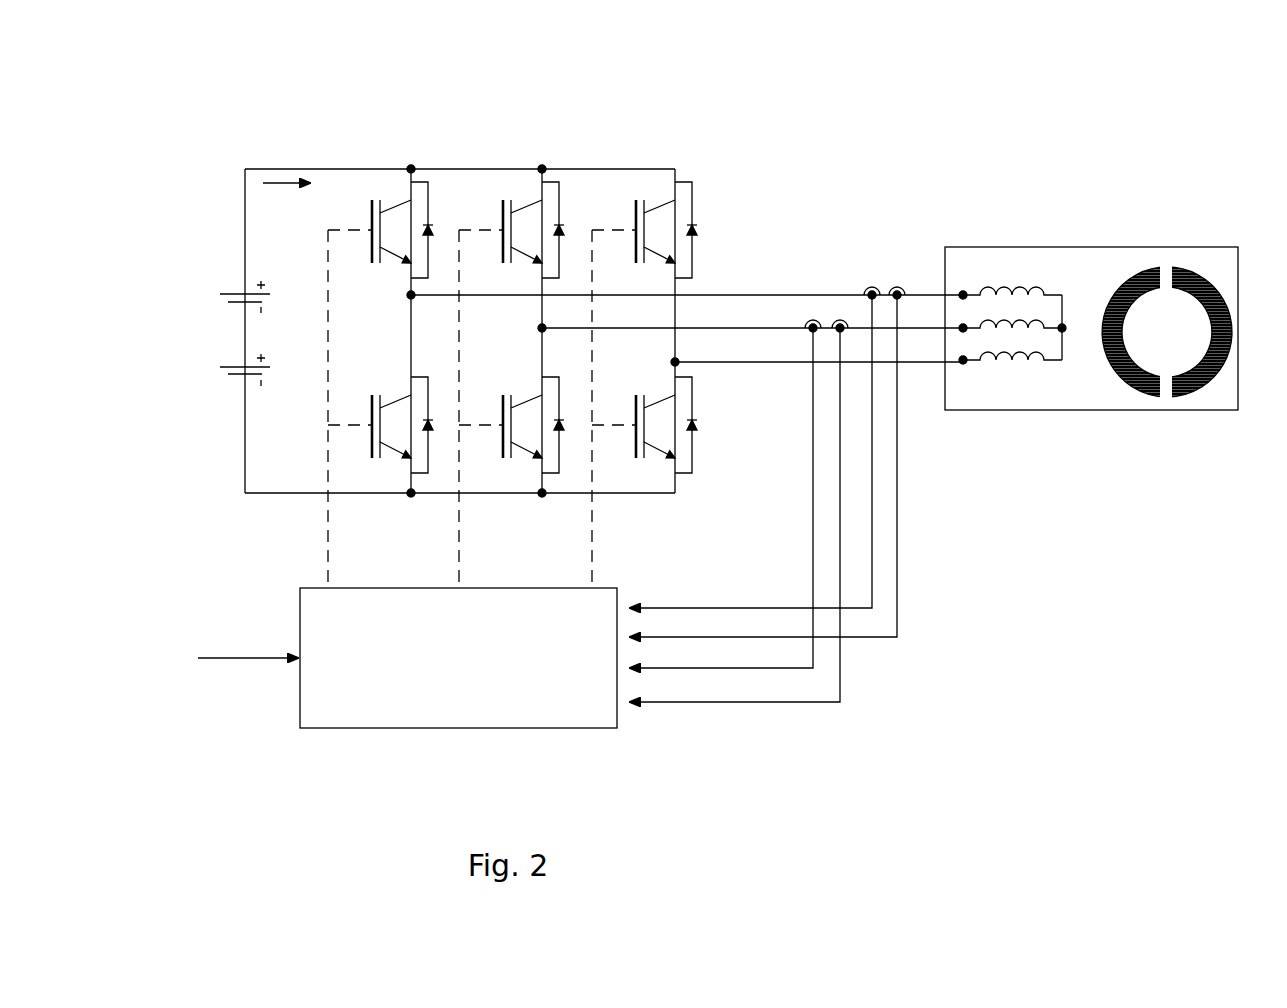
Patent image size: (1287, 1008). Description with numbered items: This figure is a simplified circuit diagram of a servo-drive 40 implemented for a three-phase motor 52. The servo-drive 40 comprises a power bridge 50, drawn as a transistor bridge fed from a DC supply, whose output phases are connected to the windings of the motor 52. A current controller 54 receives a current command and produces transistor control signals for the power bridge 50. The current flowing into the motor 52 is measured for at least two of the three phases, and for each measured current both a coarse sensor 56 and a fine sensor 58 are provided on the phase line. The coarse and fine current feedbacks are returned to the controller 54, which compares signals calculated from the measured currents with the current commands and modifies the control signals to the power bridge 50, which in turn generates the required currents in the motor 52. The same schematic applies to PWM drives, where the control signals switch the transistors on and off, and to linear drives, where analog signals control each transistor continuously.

The servo-drive 40 is at (285, 120).
The power bridge 50 is at (583, 169).
The three-phase motor 52 is at (1001, 245).
The current controller 54 is at (350, 712).
The coarse sensor 56 is at (797, 303).
The fine sensor 58 is at (838, 315).